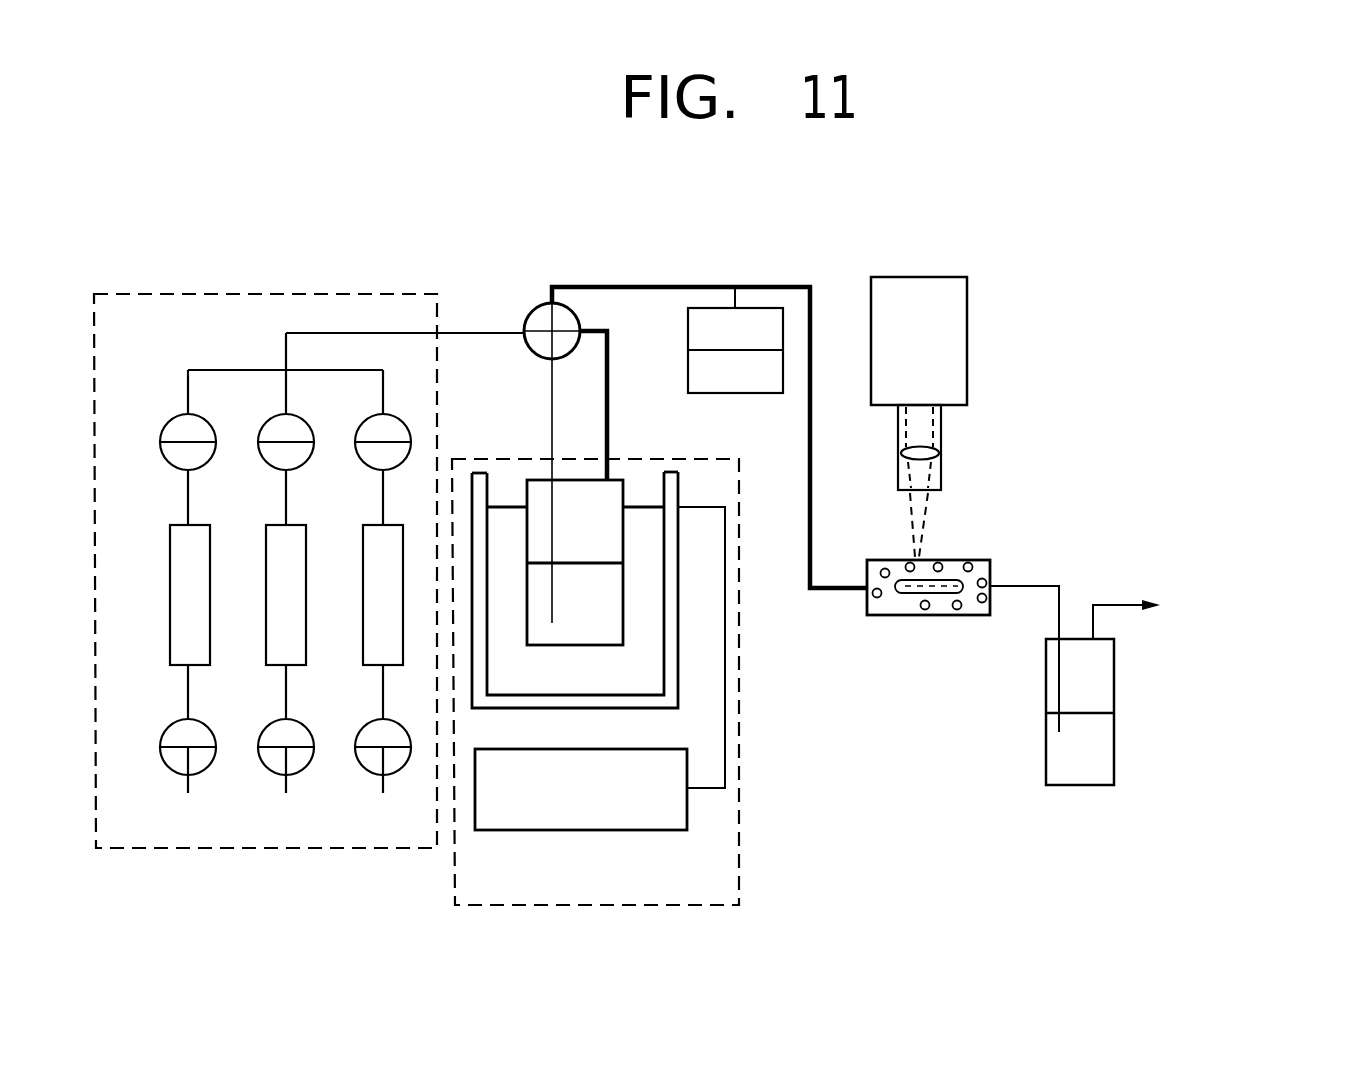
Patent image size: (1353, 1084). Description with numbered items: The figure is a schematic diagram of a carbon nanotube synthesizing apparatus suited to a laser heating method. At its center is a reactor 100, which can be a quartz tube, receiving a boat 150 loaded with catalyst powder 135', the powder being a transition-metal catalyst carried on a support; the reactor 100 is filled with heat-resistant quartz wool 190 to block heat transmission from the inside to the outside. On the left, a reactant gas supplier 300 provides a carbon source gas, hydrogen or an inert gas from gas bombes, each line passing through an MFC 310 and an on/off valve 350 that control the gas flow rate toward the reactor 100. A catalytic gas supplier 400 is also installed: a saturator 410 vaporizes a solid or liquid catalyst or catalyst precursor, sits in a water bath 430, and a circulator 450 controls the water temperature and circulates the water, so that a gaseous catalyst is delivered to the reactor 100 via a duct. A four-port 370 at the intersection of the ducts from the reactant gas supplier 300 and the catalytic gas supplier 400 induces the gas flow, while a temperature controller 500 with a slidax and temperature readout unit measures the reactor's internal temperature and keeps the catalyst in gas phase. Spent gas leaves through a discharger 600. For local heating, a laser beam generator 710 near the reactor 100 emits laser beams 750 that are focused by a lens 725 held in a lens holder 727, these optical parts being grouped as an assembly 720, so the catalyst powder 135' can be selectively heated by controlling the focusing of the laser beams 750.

The reactor 100 is at (977, 558).
The catalyst powder 135' is at (952, 539).
The boat 150 is at (987, 583).
The quartz wool 190 is at (886, 566).
The reactant gas supplier 300 is at (303, 848).
The MFC 310 is at (170, 572).
The on/off valve 350 is at (177, 417).
The four-port 370 is at (533, 307).
The catalytic gas supplier 400 is at (742, 848).
The saturator 410 is at (623, 597).
The water bath 430 is at (678, 678).
The circulator 450 is at (638, 810).
The temperature controller 500 is at (687, 377).
The discharger 600 is at (1094, 758).
The laser beam generator 710 is at (967, 297).
The optical unit 720 is at (1090, 375).
The lens 725 is at (915, 447).
The lens holder 727 is at (940, 444).
The laser beams 750 is at (933, 484).